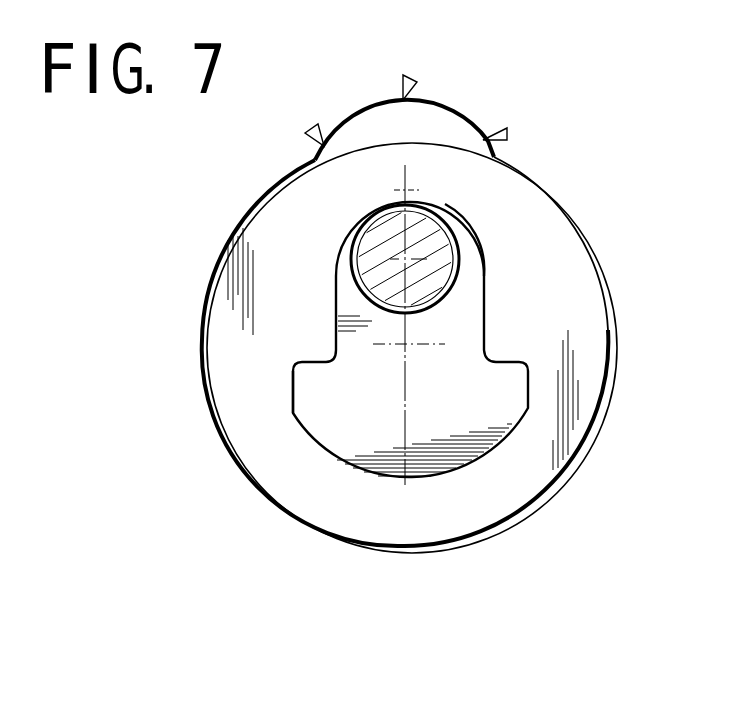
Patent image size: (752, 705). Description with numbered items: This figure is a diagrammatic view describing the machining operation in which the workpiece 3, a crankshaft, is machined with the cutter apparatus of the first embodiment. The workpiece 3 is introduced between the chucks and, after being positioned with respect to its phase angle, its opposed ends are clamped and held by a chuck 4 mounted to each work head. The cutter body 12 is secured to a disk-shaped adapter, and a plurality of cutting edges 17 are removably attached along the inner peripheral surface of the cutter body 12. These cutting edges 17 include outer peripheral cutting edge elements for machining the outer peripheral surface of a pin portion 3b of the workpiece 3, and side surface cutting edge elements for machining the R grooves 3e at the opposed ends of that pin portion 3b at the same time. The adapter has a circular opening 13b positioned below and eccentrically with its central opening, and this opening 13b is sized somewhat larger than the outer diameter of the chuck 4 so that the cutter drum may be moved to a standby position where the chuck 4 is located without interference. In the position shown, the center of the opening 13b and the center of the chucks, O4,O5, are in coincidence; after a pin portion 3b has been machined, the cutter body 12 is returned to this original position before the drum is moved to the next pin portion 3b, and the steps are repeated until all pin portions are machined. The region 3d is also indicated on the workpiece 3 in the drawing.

The cutting edges 17 is at (403, 76).
The cutter body 12 is at (456, 102).
The chuck 4 is at (610, 288).
The circular opening 13b is at (612, 391).
The workpiece 3 is at (427, 339).
The pin portion 3b is at (358, 263).
The R grooves 3e is at (462, 248).
The lateral wall 3d is at (320, 404).
The center of the opening and center of the chucks O4,O5 is at (408, 348).